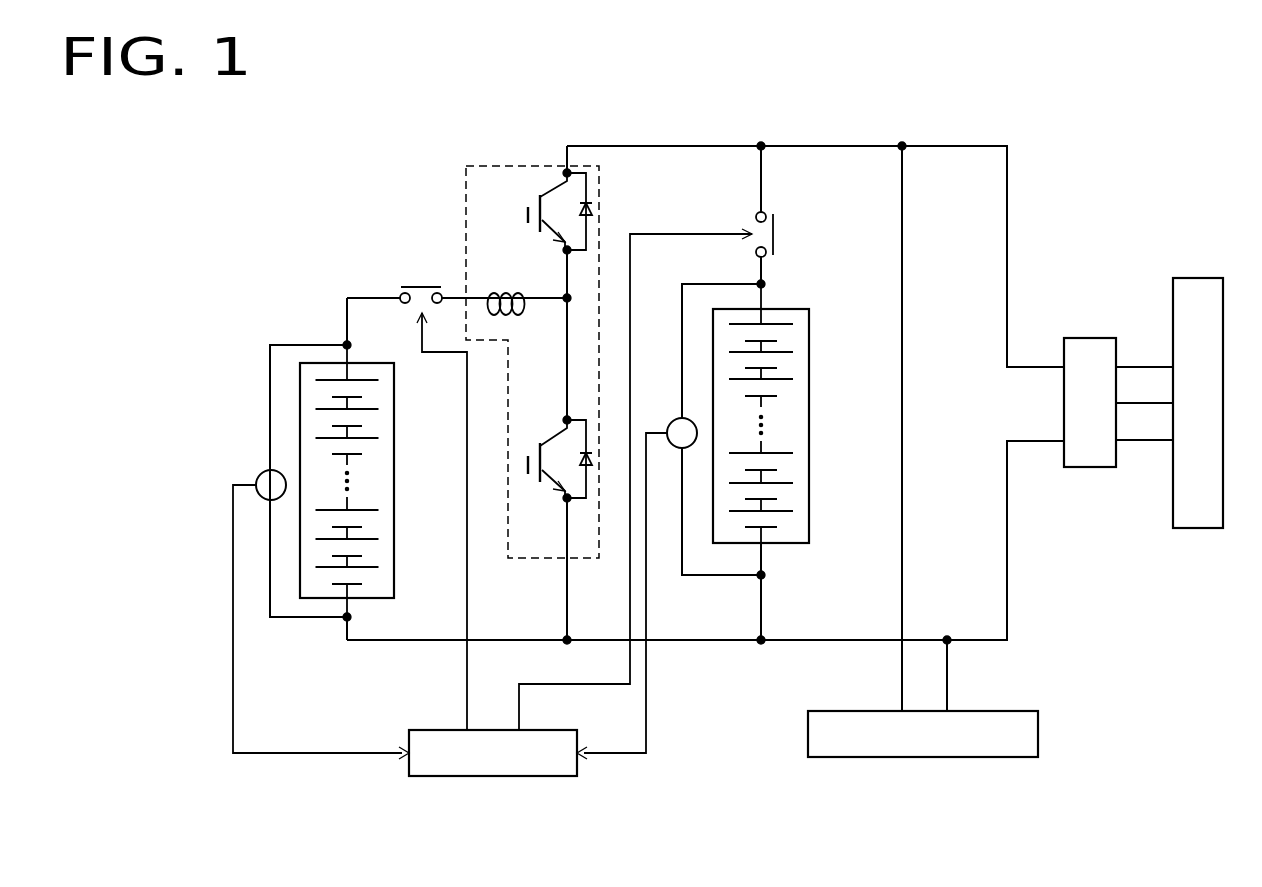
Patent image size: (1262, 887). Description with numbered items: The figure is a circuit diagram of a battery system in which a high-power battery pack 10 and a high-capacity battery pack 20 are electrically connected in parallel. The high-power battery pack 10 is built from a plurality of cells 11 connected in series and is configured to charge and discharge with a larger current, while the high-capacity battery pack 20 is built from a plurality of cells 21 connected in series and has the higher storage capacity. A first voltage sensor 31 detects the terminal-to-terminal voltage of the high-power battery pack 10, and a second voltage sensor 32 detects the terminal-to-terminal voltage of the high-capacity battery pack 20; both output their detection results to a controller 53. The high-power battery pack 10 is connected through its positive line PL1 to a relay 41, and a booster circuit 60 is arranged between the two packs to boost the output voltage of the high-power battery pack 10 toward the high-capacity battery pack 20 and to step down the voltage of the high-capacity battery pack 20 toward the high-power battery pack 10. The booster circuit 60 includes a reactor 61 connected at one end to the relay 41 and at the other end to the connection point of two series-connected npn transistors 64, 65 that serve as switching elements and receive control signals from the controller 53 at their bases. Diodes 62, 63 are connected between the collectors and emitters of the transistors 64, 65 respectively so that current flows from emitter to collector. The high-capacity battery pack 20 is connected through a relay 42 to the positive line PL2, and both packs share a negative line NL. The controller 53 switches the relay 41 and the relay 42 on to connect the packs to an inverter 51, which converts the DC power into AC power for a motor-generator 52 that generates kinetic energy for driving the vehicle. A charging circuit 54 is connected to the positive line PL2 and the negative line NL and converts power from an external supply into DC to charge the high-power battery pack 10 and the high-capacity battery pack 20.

The high-power battery pack 10 is at (394, 482).
The cells 11 is at (374, 388).
The high-capacity battery pack 20 is at (808, 439).
The cells 21 is at (787, 333).
The first voltage sensor 31 is at (257, 477).
The second voltage sensor 32 is at (671, 421).
The relay 41 is at (422, 280).
The relay 42 is at (787, 235).
The inverter 51 is at (1090, 468).
The motor-generator 52 is at (1198, 529).
The controller 53 is at (493, 777).
The charging circuit 54 is at (922, 758).
The booster circuit 60 is at (554, 354).
The reactor 61 is at (522, 318).
The diode 62 is at (594, 212).
The diode 63 is at (594, 457).
The transistor 64 is at (529, 226).
The transistor 65 is at (529, 482).
The positive line PL1 is at (378, 298).
The positive line PL2 is at (722, 146).
The negative line NL is at (677, 648).